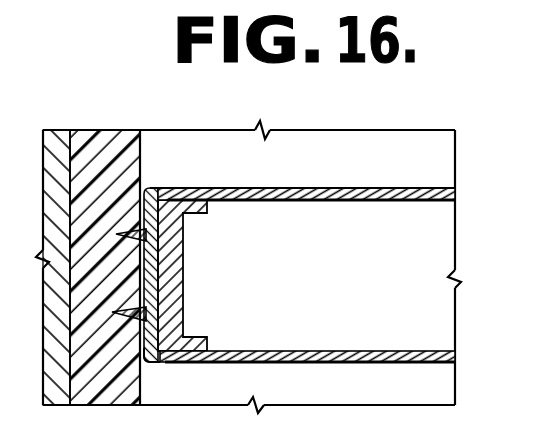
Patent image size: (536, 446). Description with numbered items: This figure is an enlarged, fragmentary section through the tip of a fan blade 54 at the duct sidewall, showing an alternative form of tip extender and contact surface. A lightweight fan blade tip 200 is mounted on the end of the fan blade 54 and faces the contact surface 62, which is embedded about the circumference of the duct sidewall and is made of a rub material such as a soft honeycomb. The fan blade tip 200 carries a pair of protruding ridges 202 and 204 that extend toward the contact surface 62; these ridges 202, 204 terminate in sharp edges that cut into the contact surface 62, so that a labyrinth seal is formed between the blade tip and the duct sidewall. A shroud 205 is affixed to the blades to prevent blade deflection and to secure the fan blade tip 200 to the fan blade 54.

The contact surface 62 is at (110, 140).
The fan blade tip 200 is at (150, 189).
The fan blade 54 is at (371, 194).
The protruding ridge 202 is at (124, 233).
The protruding ridge 204 is at (128, 316).
The shroud 205 is at (157, 362).